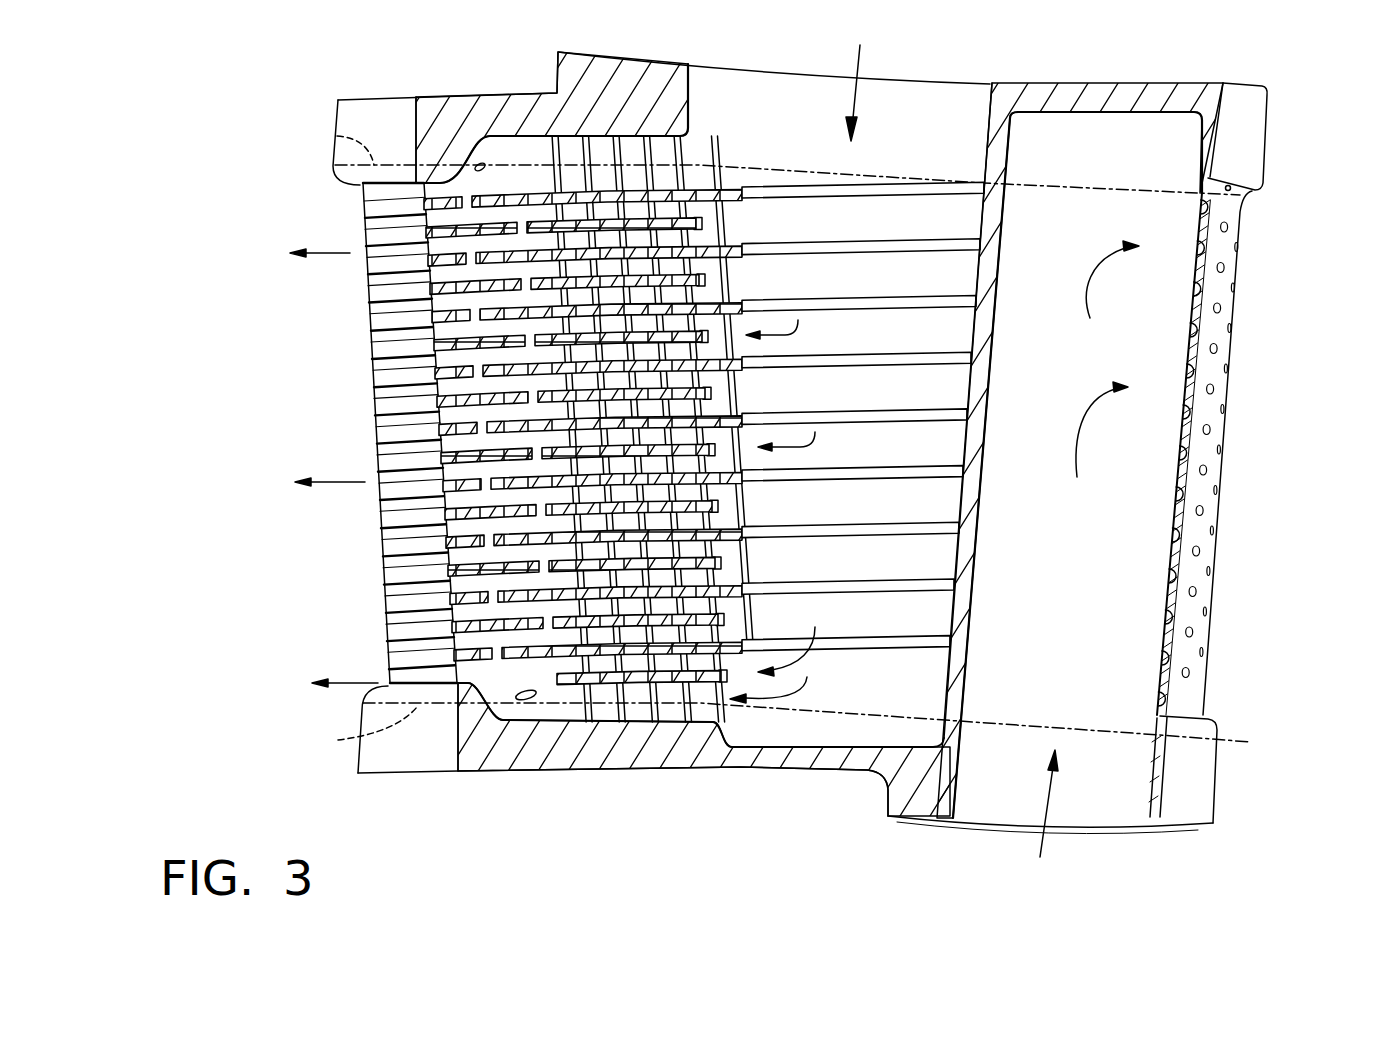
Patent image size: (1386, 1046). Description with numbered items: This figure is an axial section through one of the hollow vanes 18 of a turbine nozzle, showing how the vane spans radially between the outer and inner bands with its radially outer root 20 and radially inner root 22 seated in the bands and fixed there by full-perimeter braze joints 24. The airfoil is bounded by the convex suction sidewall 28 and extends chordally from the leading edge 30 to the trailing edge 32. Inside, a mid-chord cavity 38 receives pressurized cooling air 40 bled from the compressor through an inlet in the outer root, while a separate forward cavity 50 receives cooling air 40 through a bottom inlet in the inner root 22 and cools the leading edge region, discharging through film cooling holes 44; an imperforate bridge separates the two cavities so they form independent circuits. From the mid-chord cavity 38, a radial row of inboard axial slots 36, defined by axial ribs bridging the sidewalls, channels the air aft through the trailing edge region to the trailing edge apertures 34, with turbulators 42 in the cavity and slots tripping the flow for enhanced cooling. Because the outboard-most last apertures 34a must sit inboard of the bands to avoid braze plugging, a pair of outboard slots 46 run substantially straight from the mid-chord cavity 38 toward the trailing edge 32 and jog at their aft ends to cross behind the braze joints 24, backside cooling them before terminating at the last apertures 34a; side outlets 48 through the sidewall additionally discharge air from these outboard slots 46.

The hollow vane 18 is at (1226, 429).
The radially outer root 20 is at (1266, 120).
The radially inner root 22 is at (1218, 772).
The braze joint 24 is at (337, 136).
The suction sidewall 28 is at (1222, 474).
The leading edge 30 is at (1182, 503).
The trailing edge 32 is at (363, 307).
The trailing edge apertures 34 is at (437, 502).
The last trailing edge apertures 34a is at (366, 191).
The inboard axial slots 36 is at (693, 520).
The mid-chord cavity 38 is at (846, 342).
The cooling air 40 is at (857, 97).
The turbulators 42 is at (872, 243).
The film cooling holes 44 is at (1196, 591).
The outboard slots 46 is at (525, 148).
The side outlets 48 is at (479, 162).
The forward cavity 50 is at (1105, 534).